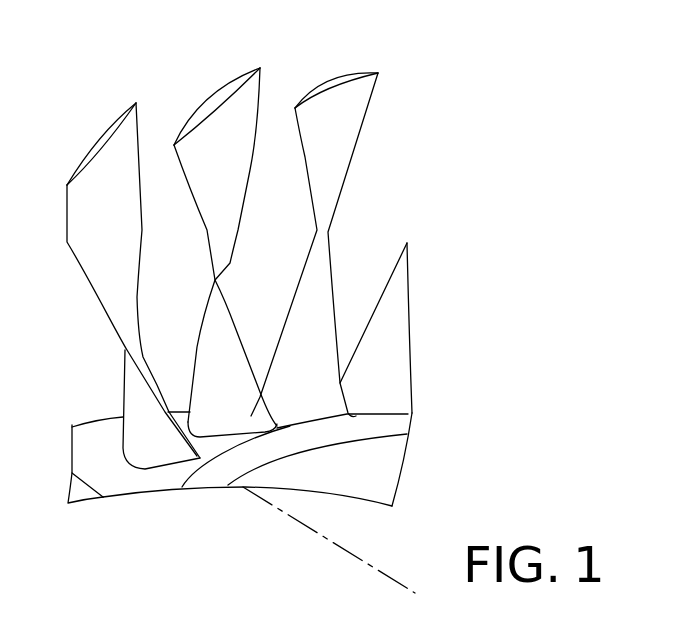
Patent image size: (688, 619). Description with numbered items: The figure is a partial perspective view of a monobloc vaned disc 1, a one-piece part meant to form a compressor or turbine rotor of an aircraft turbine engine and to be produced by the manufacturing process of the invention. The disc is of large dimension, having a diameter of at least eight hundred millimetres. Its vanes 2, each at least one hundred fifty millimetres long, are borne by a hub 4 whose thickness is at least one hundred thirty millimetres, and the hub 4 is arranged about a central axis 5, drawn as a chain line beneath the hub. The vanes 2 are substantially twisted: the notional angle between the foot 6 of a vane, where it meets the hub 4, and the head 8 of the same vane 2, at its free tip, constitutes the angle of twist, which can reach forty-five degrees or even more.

The monobloc vaned disc 1 is at (442, 137).
The vane 2 is at (133, 144).
The hub 4 is at (243, 488).
The central axis 5 is at (355, 556).
The foot 6 is at (235, 413).
The head 8 is at (112, 131).